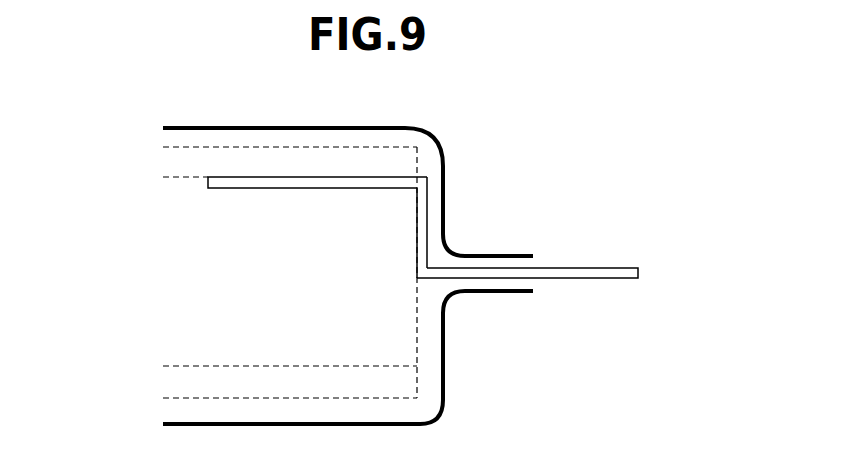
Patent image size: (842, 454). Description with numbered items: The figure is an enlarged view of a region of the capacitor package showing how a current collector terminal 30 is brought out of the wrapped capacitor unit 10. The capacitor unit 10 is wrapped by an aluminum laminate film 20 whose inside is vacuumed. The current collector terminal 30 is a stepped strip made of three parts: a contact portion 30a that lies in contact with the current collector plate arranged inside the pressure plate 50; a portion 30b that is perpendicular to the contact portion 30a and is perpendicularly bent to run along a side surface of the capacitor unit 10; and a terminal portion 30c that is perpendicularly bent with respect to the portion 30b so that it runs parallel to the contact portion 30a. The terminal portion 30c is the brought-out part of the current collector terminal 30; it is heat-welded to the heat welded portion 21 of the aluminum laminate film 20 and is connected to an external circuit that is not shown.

The capacitor unit 10 is at (147, 133).
The aluminum laminate film 20 is at (443, 160).
The heat welded portion 21 is at (488, 254).
The current collector terminal 30 is at (483, 286).
The contact portion 30a is at (307, 188).
The portion perpendicular to the contact portion 30b is at (417, 233).
The terminal portion 30c is at (556, 244).
The pressure plate 50 is at (207, 162).